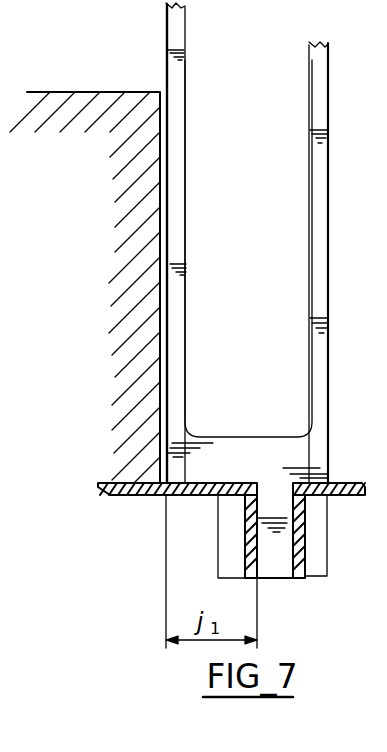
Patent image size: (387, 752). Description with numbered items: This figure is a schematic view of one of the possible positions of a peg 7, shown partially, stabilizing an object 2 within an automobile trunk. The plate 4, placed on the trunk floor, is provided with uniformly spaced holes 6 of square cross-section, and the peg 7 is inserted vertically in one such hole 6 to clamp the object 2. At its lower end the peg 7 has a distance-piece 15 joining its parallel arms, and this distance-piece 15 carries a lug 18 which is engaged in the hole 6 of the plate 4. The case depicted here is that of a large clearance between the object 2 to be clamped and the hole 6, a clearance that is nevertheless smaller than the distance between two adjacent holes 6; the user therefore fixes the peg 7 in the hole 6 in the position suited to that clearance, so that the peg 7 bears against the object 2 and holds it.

The object 2 is at (102, 127).
The peg 7 is at (330, 147).
The distance-piece 15 is at (229, 457).
The plate 4 is at (347, 483).
The hole 6 is at (252, 558).
The lug 18 is at (285, 550).